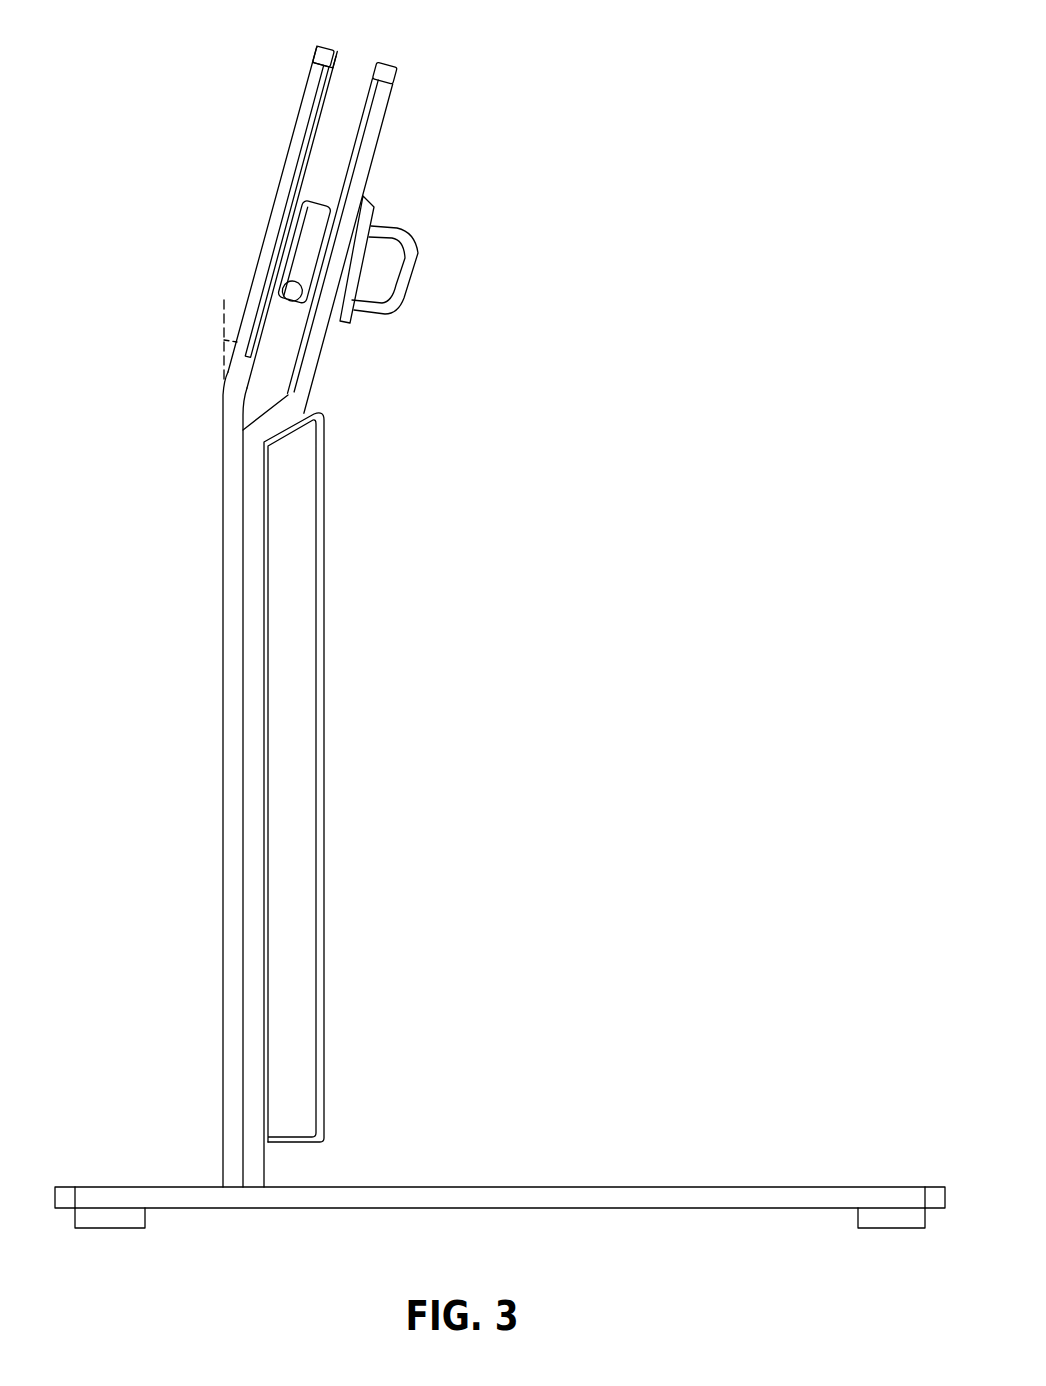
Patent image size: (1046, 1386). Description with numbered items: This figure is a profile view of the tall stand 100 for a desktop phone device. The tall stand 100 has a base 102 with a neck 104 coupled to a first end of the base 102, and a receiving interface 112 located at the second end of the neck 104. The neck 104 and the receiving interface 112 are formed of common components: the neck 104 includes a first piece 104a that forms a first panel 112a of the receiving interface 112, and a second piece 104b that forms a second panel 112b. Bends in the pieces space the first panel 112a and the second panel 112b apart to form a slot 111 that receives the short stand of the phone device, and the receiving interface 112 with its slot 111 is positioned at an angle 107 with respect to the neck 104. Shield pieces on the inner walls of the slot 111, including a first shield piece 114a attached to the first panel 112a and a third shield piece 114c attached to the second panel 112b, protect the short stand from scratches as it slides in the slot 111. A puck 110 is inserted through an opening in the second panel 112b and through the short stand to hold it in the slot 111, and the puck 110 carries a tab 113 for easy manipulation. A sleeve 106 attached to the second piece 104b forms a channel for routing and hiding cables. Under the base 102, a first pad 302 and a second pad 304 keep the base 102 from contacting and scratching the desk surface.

The tall stand 100 is at (185, 58).
The base 102 is at (397, 1185).
The neck 104 is at (172, 717).
The first piece 104a is at (232, 659).
The second piece 104b is at (257, 622).
The sleeve 106 is at (320, 680).
The angle 107 is at (228, 335).
The puck 110 is at (343, 325).
The slot 111 is at (352, 68).
The receiving interface 112 is at (250, 195).
The first panel 112a is at (268, 262).
The second panel 112b is at (362, 177).
The tab 113 is at (410, 265).
The first shield piece 114a is at (312, 160).
The third shield piece 114c is at (360, 133).
The first pad 302 is at (105, 1226).
The second pad 304 is at (892, 1226).